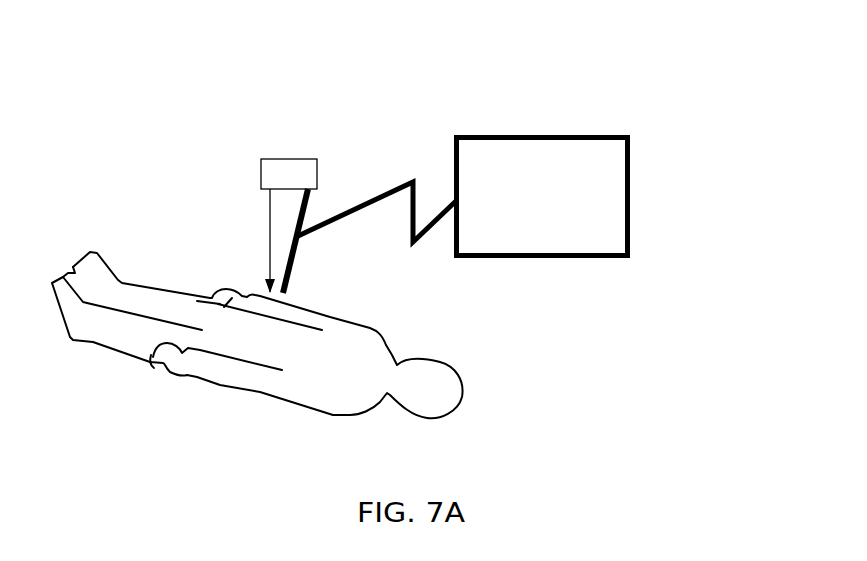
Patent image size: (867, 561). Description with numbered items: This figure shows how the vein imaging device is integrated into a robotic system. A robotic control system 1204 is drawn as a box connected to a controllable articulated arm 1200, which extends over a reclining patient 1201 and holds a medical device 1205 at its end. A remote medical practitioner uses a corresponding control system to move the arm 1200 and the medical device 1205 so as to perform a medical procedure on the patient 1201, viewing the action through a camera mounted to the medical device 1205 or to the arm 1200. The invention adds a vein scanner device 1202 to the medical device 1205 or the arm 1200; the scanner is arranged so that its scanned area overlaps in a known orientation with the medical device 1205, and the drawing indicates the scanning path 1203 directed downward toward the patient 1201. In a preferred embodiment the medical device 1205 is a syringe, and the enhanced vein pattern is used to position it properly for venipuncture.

The controllable articulated arm 1200 is at (387, 185).
The patient 1201 is at (245, 397).
The vein scanner device 1202 is at (258, 147).
The scan beam / scanning path 1203 is at (268, 235).
The robotic control system 1204 is at (633, 208).
The medical device 1205 is at (298, 254).